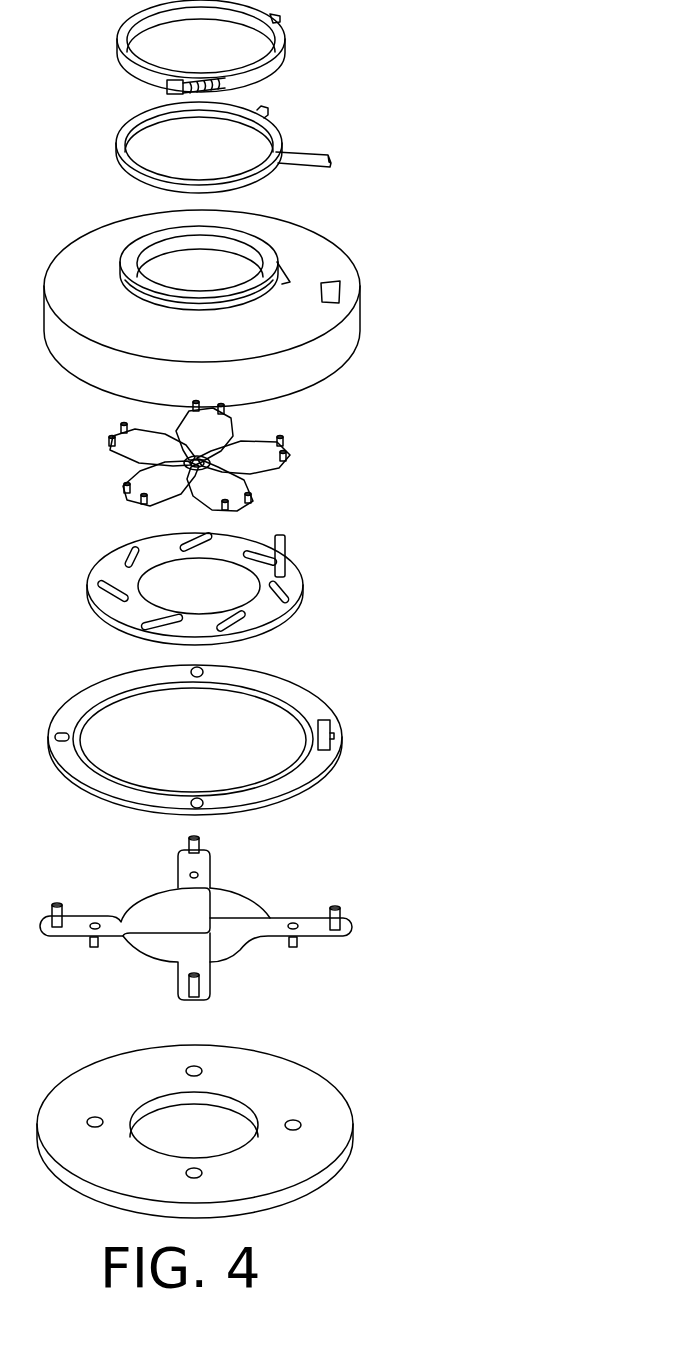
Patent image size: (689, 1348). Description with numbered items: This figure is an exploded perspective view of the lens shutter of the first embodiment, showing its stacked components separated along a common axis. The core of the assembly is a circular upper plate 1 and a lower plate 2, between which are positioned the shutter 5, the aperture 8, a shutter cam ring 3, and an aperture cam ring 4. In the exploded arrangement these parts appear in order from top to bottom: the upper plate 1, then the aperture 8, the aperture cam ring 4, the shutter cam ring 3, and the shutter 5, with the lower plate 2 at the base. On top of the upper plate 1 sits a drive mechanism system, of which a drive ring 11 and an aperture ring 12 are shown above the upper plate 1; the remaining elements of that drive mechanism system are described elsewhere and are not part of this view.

The housing body 1 is at (331, 262).
The base disc 2 is at (325, 1107).
The retaining ring 3 is at (318, 703).
The slotted plate 4 is at (293, 582).
The cross bracket 5 is at (240, 910).
The iris blade assembly 8 is at (262, 464).
The ring with handle 11 is at (281, 136).
The spring clamp ring 12 is at (283, 35).